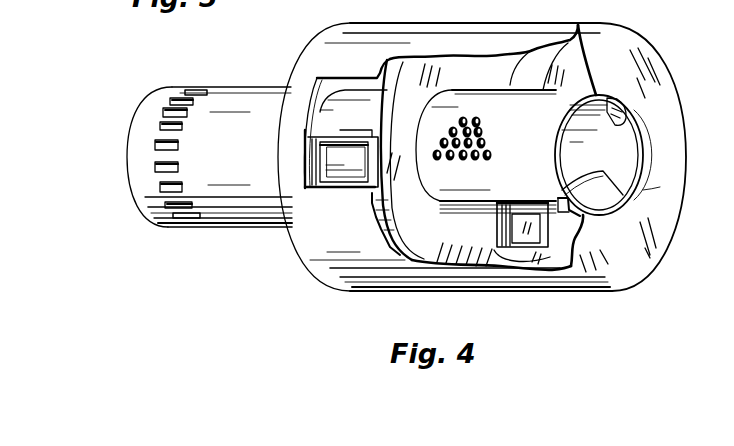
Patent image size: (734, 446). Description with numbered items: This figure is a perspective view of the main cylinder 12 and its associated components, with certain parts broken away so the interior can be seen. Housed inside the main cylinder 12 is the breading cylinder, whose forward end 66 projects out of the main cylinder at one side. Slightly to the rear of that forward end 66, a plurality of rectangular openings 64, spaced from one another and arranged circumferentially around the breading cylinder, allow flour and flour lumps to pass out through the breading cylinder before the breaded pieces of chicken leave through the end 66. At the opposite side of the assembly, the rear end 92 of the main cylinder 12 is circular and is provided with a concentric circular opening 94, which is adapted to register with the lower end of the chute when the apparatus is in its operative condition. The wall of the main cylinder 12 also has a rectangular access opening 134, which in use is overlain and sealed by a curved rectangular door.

The main cylinder 12 is at (474, 32).
The rectangular openings 64 is at (153, 148).
The forward end 66 is at (140, 123).
The rear end 92 is at (650, 60).
The concentric circular opening 94 is at (643, 190).
The rectangular access opening 134 is at (338, 192).